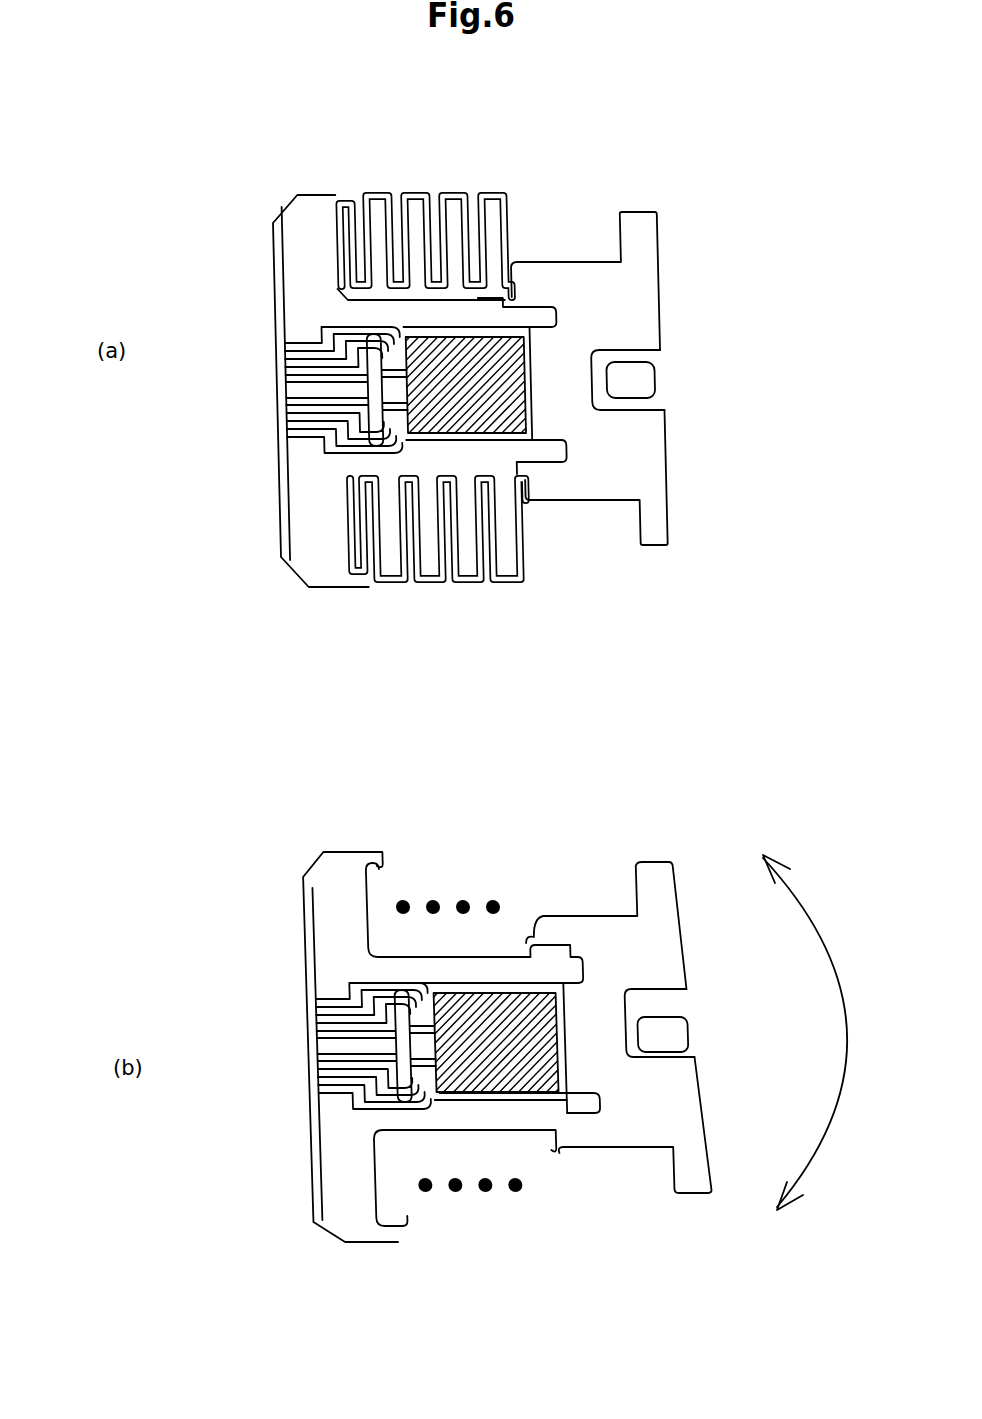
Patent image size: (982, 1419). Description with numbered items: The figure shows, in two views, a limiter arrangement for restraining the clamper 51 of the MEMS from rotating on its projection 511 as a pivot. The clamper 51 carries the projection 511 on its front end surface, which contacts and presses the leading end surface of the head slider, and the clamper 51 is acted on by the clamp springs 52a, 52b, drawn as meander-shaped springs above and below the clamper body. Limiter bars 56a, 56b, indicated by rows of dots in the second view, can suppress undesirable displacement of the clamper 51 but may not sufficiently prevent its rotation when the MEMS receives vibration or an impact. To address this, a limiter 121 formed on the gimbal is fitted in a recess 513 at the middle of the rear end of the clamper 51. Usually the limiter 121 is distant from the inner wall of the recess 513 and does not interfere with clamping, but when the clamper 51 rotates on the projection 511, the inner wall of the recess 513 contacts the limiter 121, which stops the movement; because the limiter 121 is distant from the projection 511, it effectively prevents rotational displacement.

The clamper 51 is at (586, 262).
The projection 511 is at (523, 377).
The recess 513 is at (652, 400).
The limiter 121 is at (656, 370).
The clamp spring 52a is at (488, 188).
The clamp spring 52b is at (432, 587).
The limiter bar 56a is at (523, 920).
The limiter bar 56b is at (500, 1135).